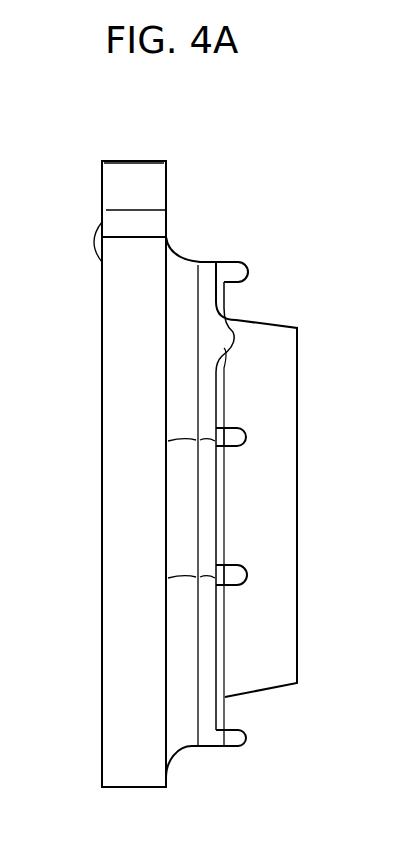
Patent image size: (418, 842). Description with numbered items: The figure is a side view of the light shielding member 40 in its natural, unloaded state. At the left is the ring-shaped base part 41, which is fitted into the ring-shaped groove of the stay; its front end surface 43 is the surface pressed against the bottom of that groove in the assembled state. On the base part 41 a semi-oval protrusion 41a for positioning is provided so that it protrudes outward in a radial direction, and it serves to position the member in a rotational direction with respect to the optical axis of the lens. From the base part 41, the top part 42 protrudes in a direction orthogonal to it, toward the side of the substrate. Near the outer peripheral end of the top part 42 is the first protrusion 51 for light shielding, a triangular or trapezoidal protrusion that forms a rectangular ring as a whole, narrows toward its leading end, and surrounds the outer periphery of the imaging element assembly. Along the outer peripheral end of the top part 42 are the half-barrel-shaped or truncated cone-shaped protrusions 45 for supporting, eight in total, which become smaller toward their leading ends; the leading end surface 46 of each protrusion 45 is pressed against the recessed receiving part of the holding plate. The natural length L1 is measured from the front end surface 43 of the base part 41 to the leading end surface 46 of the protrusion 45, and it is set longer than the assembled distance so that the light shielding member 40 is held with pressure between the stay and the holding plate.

The light shielding member 40 is at (263, 298).
The base part 41 is at (120, 323).
The protrusion for positioning 41a is at (122, 181).
The top part 42 is at (215, 402).
The front end surface 43 is at (102, 258).
The protrusion for supporting 45 is at (233, 262).
The leading end surface 46 is at (247, 272).
The first protrusion for light shielding 51 is at (282, 354).
The natural length L1 is at (248, 262).